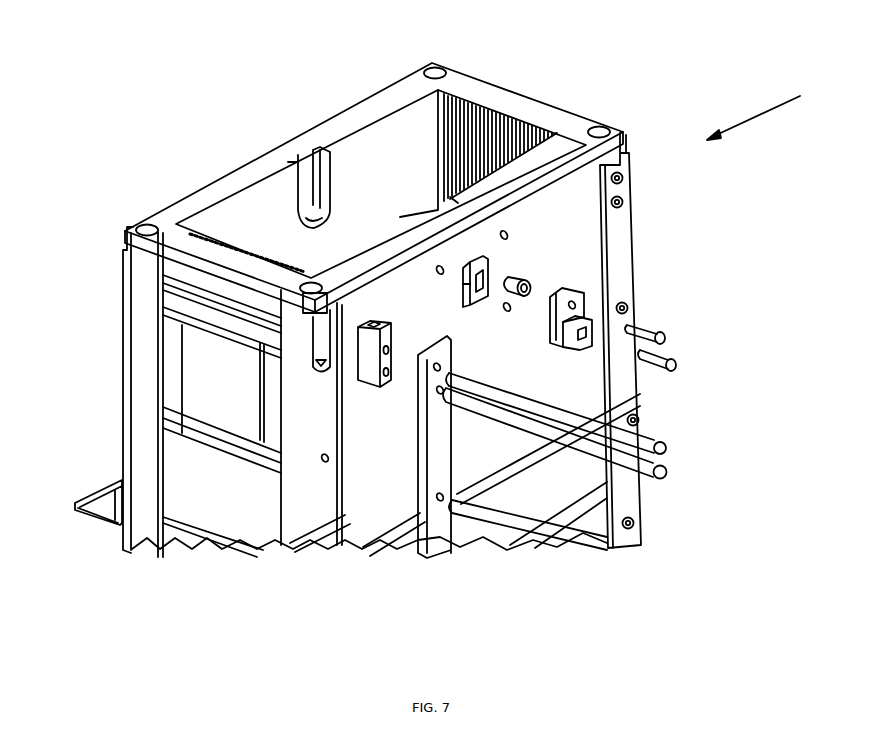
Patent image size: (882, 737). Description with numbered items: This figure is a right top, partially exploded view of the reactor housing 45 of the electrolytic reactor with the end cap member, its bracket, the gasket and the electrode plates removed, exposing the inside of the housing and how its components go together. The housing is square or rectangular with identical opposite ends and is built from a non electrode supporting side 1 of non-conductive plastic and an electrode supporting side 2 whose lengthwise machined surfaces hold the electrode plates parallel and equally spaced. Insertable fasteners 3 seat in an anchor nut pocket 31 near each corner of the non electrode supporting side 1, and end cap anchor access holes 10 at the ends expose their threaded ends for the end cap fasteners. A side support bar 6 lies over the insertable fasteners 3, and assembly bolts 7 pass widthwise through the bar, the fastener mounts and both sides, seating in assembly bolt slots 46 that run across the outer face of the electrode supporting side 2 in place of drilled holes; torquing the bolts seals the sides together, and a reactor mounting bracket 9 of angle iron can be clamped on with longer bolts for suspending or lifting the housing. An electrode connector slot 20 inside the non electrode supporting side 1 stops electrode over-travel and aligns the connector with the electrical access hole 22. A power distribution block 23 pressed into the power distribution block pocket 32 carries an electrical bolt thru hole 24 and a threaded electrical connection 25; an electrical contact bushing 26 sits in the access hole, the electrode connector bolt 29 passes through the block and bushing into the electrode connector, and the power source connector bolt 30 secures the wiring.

The non electrode supporting side 1 is at (377, 107).
The electrode supporting side 2 is at (525, 102).
The insertable fastener 3 is at (375, 362).
The side support bar 6 is at (615, 283).
The assembly bolt 7 is at (620, 177).
The reactor mounting bracket 9 is at (642, 410).
The end cap anchor access hole 10 is at (437, 74).
The electrode connector slot 20 is at (300, 162).
The electrical access hole 22 is at (328, 205).
The power distribution block 23 is at (560, 335).
The electrical bolt thru hole 24 is at (572, 300).
The threaded electrical connection 25 is at (578, 352).
The electrical contact bushing 26 is at (507, 292).
The electrode connector bolt 29 is at (655, 335).
The power source connector bolt 30 is at (672, 362).
The anchor nut pocket 31 is at (330, 335).
The power distribution block pocket 32 is at (463, 284).
The reactor housing 45 is at (765, 114).
The assembly bolt slot 46 is at (190, 290).